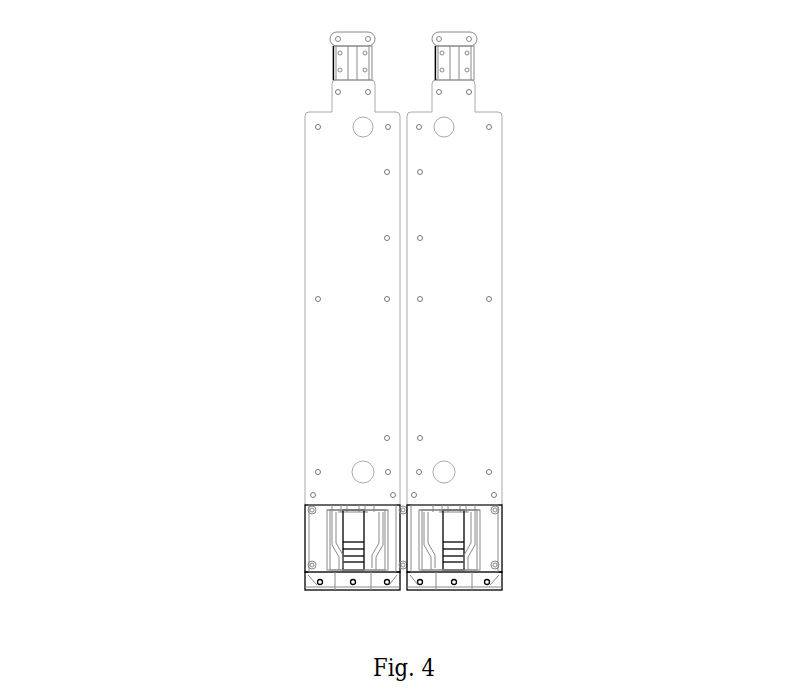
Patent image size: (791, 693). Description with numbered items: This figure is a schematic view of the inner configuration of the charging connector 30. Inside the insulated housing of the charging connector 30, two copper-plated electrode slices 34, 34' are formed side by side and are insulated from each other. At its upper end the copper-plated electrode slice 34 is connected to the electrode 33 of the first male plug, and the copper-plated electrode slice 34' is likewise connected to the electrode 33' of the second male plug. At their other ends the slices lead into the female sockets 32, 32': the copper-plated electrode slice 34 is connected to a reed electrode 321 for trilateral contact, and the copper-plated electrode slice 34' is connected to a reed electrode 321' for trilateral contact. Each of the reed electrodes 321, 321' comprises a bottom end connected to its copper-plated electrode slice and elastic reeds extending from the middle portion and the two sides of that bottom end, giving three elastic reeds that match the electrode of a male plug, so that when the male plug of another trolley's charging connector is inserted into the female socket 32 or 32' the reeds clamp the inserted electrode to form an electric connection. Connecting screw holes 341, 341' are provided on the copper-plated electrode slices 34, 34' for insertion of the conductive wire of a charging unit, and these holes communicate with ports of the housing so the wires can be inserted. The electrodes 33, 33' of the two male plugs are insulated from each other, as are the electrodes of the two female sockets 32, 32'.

The charging connector 30 is at (208, 361).
The electrode 33 is at (275, 56).
The electrode 33' is at (524, 58).
The copper-plated electrode slice 34 is at (282, 292).
The copper-plated electrode slice 34' is at (521, 292).
The connecting screw hole 341 is at (277, 183).
The connecting screw hole 341' is at (527, 217).
The female socket 32 is at (291, 579).
The female socket 32' is at (524, 569).
The reed electrode 321 is at (282, 540).
The reed electrode 321' is at (530, 527).